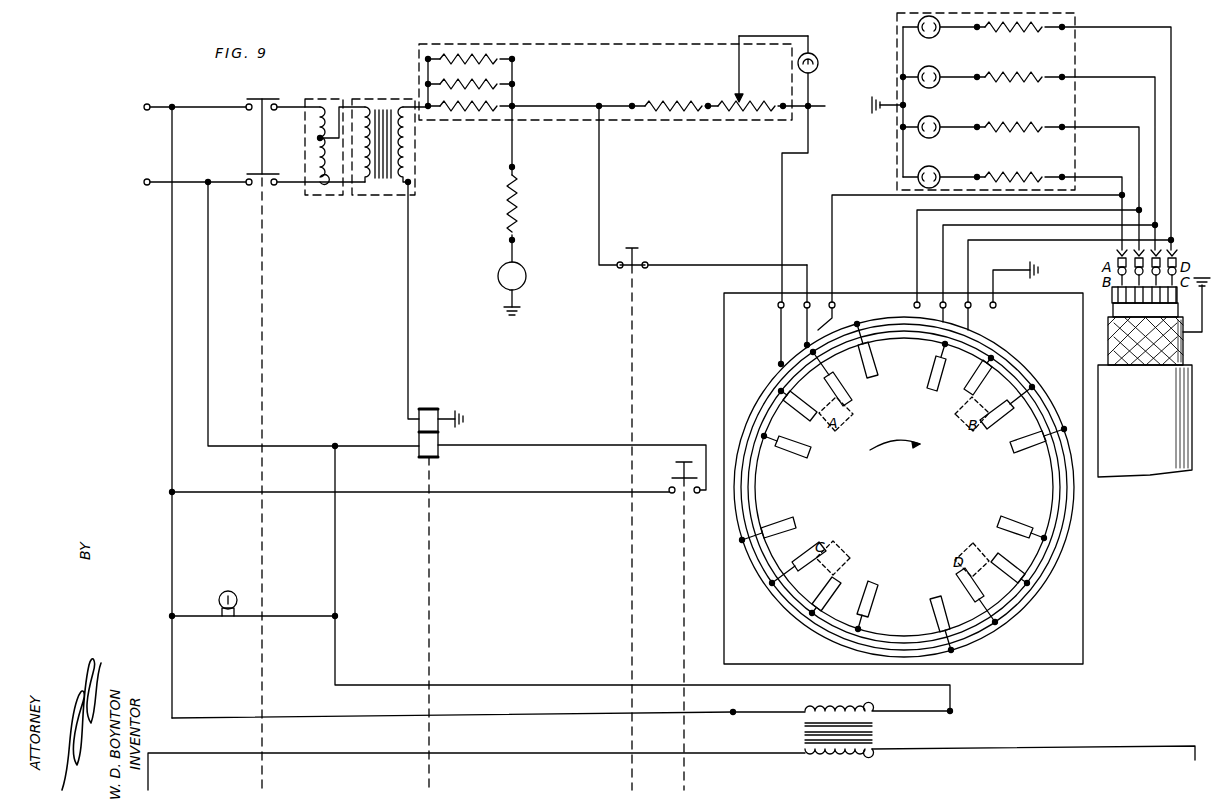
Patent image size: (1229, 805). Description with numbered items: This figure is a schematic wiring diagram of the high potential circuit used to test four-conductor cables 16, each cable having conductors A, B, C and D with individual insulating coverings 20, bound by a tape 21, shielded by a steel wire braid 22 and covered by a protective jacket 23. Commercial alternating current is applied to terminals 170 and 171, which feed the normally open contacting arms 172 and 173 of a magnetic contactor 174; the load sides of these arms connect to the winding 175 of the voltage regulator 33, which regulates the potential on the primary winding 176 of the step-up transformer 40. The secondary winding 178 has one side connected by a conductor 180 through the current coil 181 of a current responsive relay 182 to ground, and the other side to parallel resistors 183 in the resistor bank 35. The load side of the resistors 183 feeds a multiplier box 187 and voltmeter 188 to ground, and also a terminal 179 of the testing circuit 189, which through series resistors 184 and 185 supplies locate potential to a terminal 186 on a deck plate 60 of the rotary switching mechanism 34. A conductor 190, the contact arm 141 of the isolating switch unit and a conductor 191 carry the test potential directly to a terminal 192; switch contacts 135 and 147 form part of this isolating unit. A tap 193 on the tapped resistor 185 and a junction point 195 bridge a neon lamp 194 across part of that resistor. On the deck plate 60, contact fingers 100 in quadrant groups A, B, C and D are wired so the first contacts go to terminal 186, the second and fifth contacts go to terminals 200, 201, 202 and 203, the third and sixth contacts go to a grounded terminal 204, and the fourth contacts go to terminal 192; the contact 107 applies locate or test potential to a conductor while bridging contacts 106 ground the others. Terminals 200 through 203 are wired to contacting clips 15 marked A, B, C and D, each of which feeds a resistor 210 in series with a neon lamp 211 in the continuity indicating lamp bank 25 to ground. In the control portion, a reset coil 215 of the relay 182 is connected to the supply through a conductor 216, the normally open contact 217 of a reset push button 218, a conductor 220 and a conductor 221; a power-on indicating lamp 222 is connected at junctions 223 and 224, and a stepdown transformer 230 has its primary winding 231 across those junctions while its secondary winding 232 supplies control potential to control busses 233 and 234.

The contacting clips 15 is at (1172, 258).
The cable 16 is at (1132, 404).
The insulating coverings 20 is at (1112, 298).
The tape 21 is at (1113, 310).
The steel wire braid 22 is at (1108, 340).
The protective jacket 23 is at (1100, 381).
The continuity indicating lamp bank 25 is at (894, 156).
The voltage regulator 33 is at (322, 98).
The rotary switching mechanism 34 is at (1095, 630).
The resistor bank 35 is at (695, 124).
The step-up transformer 40 is at (385, 197).
The deck plate 60 is at (1088, 586).
The contact fingers 100 is at (884, 590).
The bridging contacts 106 is at (956, 558).
The contact 107 is at (836, 433).
The switch 135 is at (634, 248).
The contact arm 141 is at (630, 268).
The switch contacts 147 is at (648, 264).
The terminal 170 is at (144, 107).
The terminal 171 is at (144, 182).
The contacting arm 172 is at (260, 98).
The contacting arm 173 is at (260, 173).
The magnetic contactor 174 is at (258, 130).
The winding 175 is at (320, 177).
The primary winding 176 is at (364, 107).
The secondary winding 178 is at (418, 156).
The terminal 179 is at (613, 96).
The conductor 180 is at (408, 285).
The current coil 181 is at (446, 410).
The current responsive relay 182 is at (417, 432).
The resistors 183 is at (512, 82).
The series resistor 184 is at (665, 104).
The tapped resistor 185 is at (723, 104).
The terminal 186 is at (779, 300).
The multiplier box 187 is at (516, 192).
The voltmeter 188 is at (498, 277).
The testing circuit 189 is at (606, 306).
The conductor 190 is at (599, 176).
The conductor 191 is at (752, 264).
The terminal 192 is at (804, 300).
The tap 193 is at (742, 100).
The neon lamp 194 is at (818, 63).
The junction point 195 is at (825, 106).
The terminal 200 is at (830, 299).
The terminal 201 is at (916, 300).
The terminal 202 is at (942, 310).
The terminal 203 is at (970, 300).
The terminal 204 is at (996, 308).
The resistor 210 is at (1046, 130).
The neon lamps 211 is at (930, 136).
The reset coil 215 is at (436, 456).
The conductor 216 is at (172, 300).
The normally open contact 217 is at (674, 470).
The reset push button 218 is at (684, 458).
The conductor 220 is at (564, 446).
The conductor 221 is at (248, 362).
The power on indicating lamp 222 is at (235, 592).
The junction 223 is at (178, 487).
The junction 224 is at (334, 447).
The stepdown transformer 230 is at (878, 730).
The primary winding 231 is at (803, 709).
The secondary winding 232 is at (805, 750).
The control bus 233 is at (148, 780).
The control bus 234 is at (1162, 756).